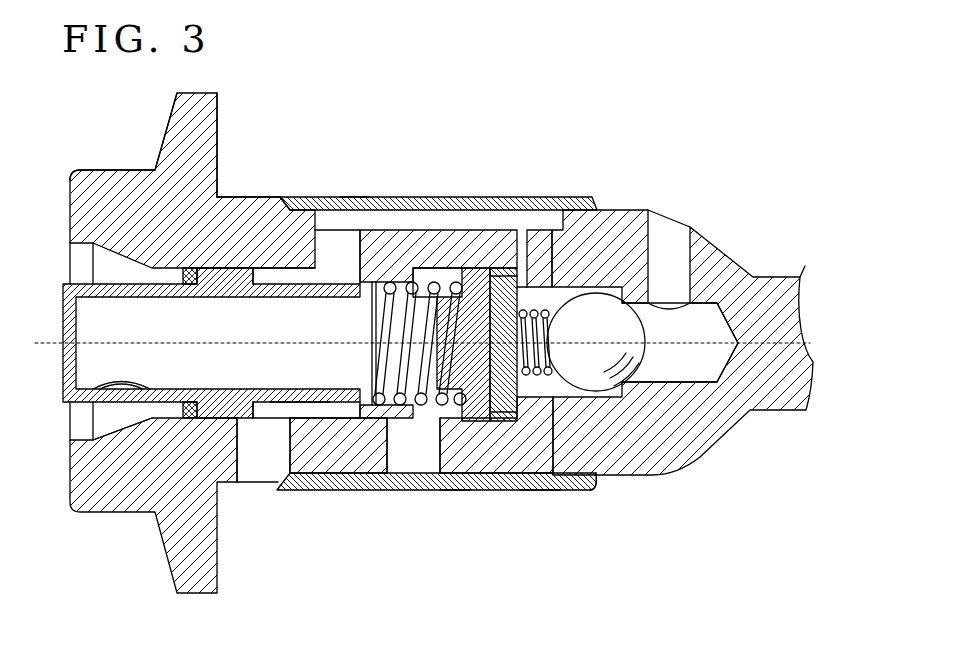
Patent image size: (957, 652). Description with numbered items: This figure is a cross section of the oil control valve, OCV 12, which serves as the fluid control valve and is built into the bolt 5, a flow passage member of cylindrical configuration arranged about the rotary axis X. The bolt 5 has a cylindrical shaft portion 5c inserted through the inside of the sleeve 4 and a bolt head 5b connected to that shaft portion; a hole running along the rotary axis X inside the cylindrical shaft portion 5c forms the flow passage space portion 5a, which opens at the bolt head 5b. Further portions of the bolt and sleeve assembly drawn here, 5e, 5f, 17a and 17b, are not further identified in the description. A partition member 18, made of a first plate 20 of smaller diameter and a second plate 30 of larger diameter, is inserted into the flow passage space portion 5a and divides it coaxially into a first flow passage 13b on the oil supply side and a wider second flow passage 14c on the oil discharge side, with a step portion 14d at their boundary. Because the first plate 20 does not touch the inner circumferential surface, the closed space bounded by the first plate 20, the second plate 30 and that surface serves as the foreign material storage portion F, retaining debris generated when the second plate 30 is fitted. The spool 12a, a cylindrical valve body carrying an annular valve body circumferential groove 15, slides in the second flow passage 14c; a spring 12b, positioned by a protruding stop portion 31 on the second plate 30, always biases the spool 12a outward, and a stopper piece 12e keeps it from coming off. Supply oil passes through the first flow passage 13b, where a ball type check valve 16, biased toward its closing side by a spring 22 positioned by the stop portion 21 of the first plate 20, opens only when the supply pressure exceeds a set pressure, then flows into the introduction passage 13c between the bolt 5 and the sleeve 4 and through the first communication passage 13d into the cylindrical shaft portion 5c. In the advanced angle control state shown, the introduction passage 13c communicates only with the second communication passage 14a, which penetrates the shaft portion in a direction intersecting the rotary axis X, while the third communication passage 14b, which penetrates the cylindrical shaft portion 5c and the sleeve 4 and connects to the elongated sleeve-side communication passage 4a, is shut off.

The sleeve 4 is at (393, 196).
The sleeve-side communication passage 4a is at (413, 481).
The bolt 5 is at (135, 509).
The flow passage space portion 5a is at (155, 413).
The bolt head 5b is at (100, 168).
The cylindrical shaft portion 5c is at (538, 491).
The flange side face 5e is at (218, 147).
The flange inclined face 5f is at (166, 125).
The OCV 12 is at (64, 300).
The spool 12a is at (222, 267).
The spring 12b is at (375, 380).
The stopper piece 12e is at (193, 420).
The first flow passage 13b is at (741, 413).
The introduction passage 13c is at (562, 196).
The first communication passage 13d is at (337, 266).
The second communication passage 14a is at (254, 474).
The third communication passage 14b is at (403, 464).
The second flow passage 14c is at (438, 276).
The step portion 14d is at (503, 422).
The valve body circumferential groove 15 is at (297, 406).
The check valve 16 is at (677, 359).
The joint portion 17a is at (256, 196).
The joint portion 17b is at (572, 491).
The partition member 18 is at (355, 196).
The first plate 20 is at (512, 267).
The stop portion 21 is at (550, 328).
The spring 22 is at (546, 382).
The second plate 30 is at (473, 267).
The stop portion 31 is at (407, 323).
The foreign material storage portion F is at (453, 491).
The rotary axis X is at (412, 343).